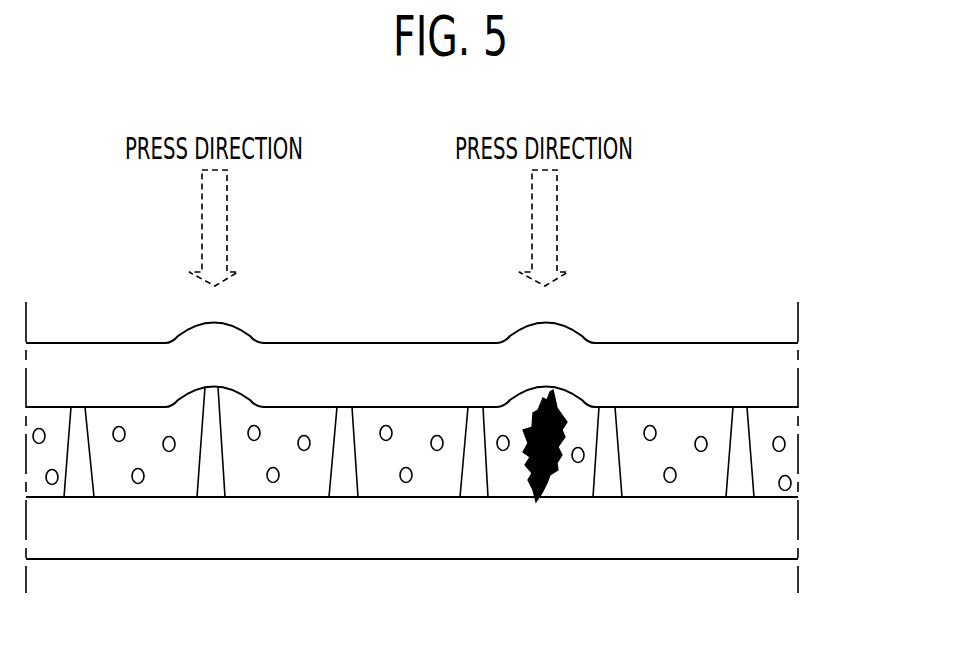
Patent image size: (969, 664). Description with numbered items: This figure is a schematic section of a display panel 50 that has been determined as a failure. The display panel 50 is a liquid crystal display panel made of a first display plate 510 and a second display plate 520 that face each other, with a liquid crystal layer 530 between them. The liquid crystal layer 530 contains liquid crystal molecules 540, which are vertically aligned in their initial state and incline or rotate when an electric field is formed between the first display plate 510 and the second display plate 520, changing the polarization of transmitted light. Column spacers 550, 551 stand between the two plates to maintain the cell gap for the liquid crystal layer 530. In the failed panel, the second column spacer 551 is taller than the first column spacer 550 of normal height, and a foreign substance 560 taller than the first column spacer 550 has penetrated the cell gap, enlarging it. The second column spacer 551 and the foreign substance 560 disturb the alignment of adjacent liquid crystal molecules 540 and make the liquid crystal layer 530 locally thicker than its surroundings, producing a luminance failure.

The display panel 50 is at (802, 228).
The first display plate 510 is at (777, 522).
The second display plate 520 is at (777, 379).
The liquid crystal layer 530 is at (777, 459).
The liquid crystal molecules 540 is at (274, 483).
The first column spacer 550 is at (78, 497).
The second column spacer 551 is at (205, 490).
The foreign substance 560 is at (535, 497).